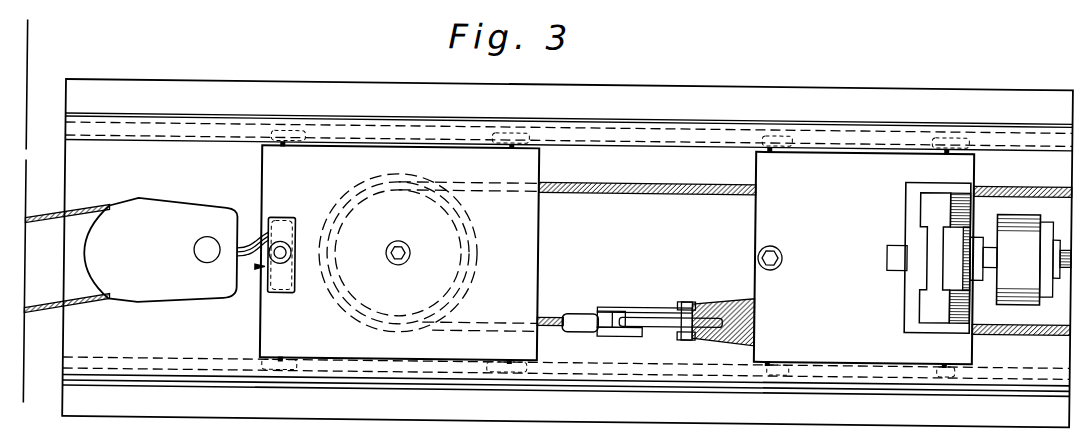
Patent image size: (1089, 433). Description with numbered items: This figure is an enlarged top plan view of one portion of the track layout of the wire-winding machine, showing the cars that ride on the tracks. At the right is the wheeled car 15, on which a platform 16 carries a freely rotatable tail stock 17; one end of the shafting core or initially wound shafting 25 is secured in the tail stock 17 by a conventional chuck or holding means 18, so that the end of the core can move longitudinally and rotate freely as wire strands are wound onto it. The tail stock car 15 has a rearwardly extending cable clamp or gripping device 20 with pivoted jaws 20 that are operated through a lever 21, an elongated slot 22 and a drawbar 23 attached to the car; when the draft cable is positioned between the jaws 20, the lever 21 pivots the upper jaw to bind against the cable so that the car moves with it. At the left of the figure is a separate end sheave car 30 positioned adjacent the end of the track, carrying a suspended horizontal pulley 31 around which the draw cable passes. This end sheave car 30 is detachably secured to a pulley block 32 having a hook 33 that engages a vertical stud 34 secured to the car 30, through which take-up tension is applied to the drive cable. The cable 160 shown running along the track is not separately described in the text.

The wheeled car 15 is at (864, 258).
The platform 16 is at (907, 314).
The tail stock 17 is at (1017, 212).
The chuck 18 is at (1040, 280).
The cable clamp 20 is at (712, 285).
The lever 21 is at (647, 295).
The elongated slot 22 is at (717, 320).
The drawbar 23 is at (742, 300).
The shafting core 25 is at (1062, 246).
The end sheave car 30 is at (540, 223).
The horizontal pulley 31 is at (440, 277).
The pulley block 32 is at (178, 208).
The hook 33 is at (246, 228).
The vertical stud 34 is at (285, 243).
The cable 160 is at (1033, 167).